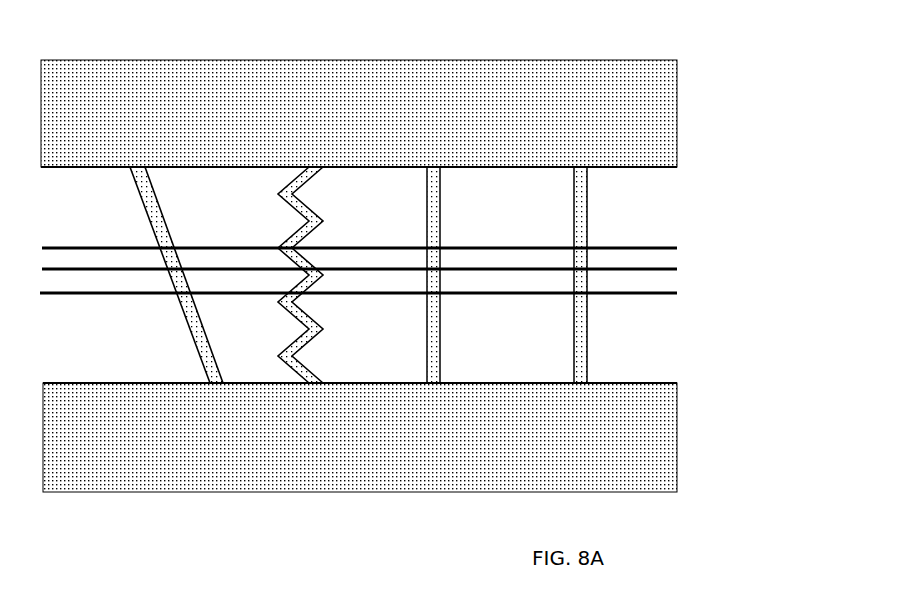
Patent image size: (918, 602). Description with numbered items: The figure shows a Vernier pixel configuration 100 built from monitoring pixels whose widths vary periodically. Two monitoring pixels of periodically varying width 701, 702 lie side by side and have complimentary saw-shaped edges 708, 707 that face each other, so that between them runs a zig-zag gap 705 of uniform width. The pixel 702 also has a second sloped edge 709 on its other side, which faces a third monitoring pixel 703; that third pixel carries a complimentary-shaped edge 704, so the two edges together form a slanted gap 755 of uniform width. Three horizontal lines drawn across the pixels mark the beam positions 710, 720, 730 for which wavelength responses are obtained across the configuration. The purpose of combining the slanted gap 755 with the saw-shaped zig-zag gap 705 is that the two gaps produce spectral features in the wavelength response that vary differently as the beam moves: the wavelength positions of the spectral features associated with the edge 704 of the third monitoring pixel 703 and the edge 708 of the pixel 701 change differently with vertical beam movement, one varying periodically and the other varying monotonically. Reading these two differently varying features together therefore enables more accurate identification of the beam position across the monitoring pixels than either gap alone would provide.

The device / substrate 100 is at (480, 167).
The monitoring pixel of periodically varying width 701 is at (348, 167).
The monitoring pixel of periodically varying width 702 is at (227, 167).
The third monitoring pixel 703 is at (112, 167).
The complimentary-shaped edge 704 is at (145, 210).
The zig-zag gap 705 is at (310, 383).
The saw-shaped edge 707 is at (297, 232).
The saw-shaped edge 708 is at (303, 203).
The second sloped edge 709 is at (152, 190).
The beam position 710 is at (675, 243).
The beam position 720 is at (675, 273).
The beam position 730 is at (670, 297).
The slanted gap 755 is at (212, 383).